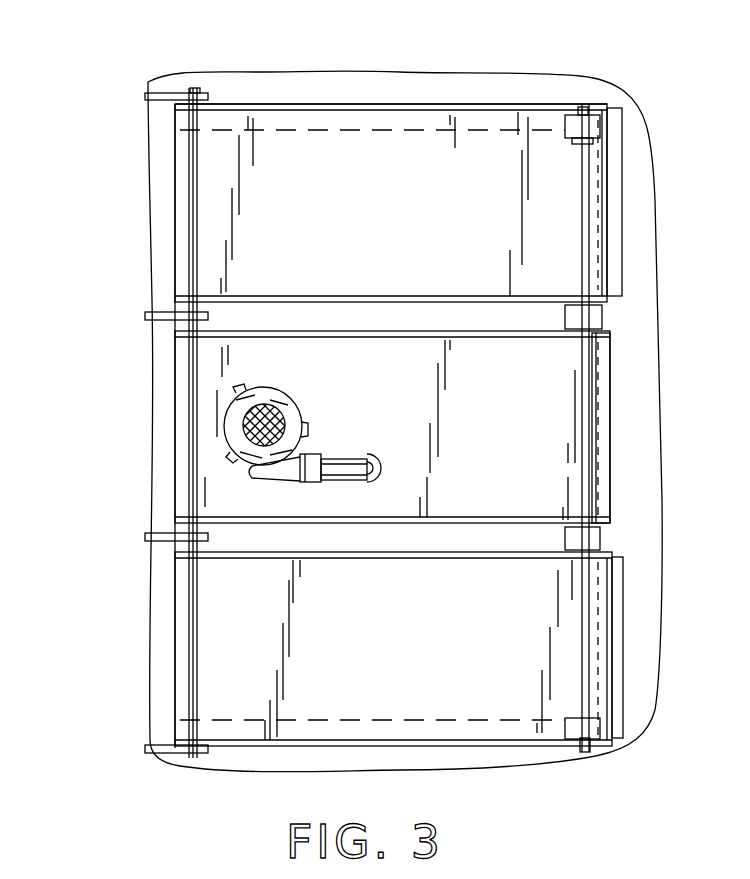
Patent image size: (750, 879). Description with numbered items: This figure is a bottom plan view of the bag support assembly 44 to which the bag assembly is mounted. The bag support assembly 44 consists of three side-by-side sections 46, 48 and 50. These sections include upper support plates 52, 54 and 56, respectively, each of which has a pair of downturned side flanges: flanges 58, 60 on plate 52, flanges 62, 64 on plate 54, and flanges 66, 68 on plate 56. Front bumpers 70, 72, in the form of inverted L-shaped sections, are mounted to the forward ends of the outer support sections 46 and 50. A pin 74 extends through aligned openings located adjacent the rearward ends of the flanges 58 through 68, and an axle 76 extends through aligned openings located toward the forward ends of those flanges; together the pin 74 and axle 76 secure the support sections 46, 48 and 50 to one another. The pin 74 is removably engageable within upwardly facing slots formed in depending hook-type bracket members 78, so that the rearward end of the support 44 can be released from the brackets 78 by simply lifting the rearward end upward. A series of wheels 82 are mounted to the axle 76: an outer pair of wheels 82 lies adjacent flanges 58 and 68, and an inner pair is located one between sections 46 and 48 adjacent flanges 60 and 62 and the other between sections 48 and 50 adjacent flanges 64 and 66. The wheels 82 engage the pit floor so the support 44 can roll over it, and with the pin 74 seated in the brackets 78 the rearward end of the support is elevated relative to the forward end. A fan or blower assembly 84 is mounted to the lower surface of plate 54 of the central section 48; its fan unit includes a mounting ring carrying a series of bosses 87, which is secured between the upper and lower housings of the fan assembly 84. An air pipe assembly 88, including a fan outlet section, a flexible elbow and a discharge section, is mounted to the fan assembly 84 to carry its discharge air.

The bag support assembly 44 is at (365, 100).
The support section 46 is at (613, 278).
The central support section 48 is at (614, 466).
The support section 50 is at (629, 646).
The upper support plate 52 is at (295, 254).
The upper support plate 54 is at (452, 432).
The upper support plate 56 is at (365, 686).
The downturned side flange 58 is at (441, 131).
The downturned side flange 60 is at (480, 299).
The downturned side flange 62 is at (465, 338).
The downturned side flange 64 is at (490, 518).
The downturned side flange 66 is at (463, 555).
The downturned side flange 68 is at (465, 721).
The front bumper 70 is at (621, 229).
The front bumper 72 is at (621, 695).
The pin 74 is at (202, 88).
The axle 76 is at (600, 427).
The hook-type bracket member 78 is at (171, 106).
The wheel 82 is at (601, 128).
The fan or blower assembly 84 is at (313, 408).
The boss 87 is at (245, 388).
The air pipe assembly 88 is at (347, 489).